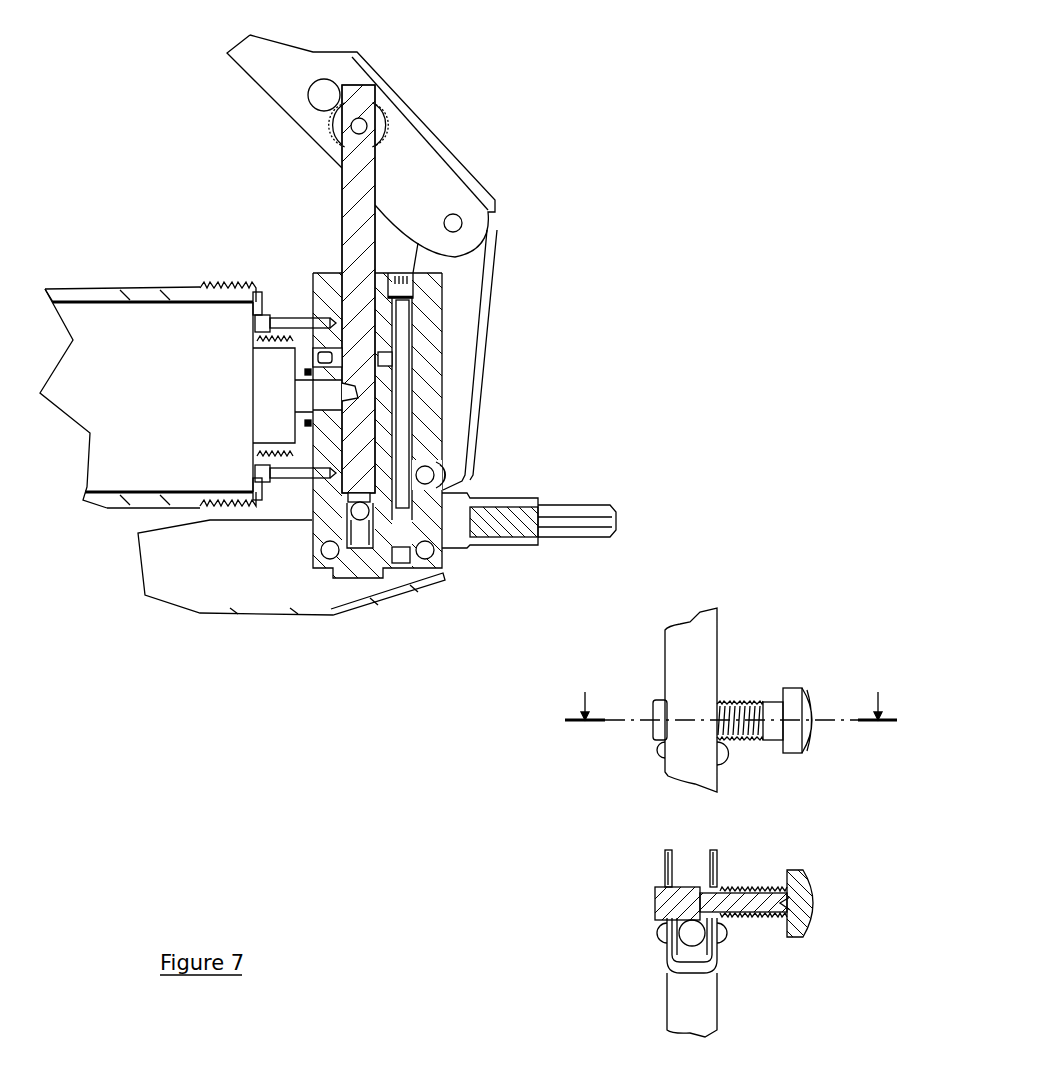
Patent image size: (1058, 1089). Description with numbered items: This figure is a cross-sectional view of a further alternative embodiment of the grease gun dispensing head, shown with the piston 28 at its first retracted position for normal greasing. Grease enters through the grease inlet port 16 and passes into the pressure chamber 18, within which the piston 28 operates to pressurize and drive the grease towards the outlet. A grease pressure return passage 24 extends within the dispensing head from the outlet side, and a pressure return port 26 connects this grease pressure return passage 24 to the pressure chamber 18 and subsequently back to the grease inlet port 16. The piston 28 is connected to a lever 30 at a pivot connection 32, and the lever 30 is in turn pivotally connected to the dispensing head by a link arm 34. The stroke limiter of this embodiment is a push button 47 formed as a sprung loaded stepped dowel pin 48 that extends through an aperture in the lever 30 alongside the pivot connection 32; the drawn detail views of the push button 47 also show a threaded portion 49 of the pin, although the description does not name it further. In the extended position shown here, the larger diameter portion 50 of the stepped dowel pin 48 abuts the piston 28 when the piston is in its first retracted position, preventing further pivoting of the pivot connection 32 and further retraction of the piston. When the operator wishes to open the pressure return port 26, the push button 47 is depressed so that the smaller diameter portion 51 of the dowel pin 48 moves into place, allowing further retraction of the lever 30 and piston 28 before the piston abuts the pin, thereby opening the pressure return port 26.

The grease inlet port 16 is at (332, 403).
The pressure chamber 18 is at (434, 472).
The grease pressure return passage 24 is at (402, 445).
The pressure return port 26 is at (390, 360).
The piston 28 is at (352, 205).
The lever 30 is at (403, 93).
The pivot connection 32 is at (385, 127).
The link arm 34 is at (470, 285).
The push button 47 is at (337, 84).
The stepped dowel pin 48 is at (655, 700).
The threaded bolt 49 is at (737, 705).
The larger diameter portion 50 is at (675, 898).
The smaller diameter portion 51 is at (733, 898).